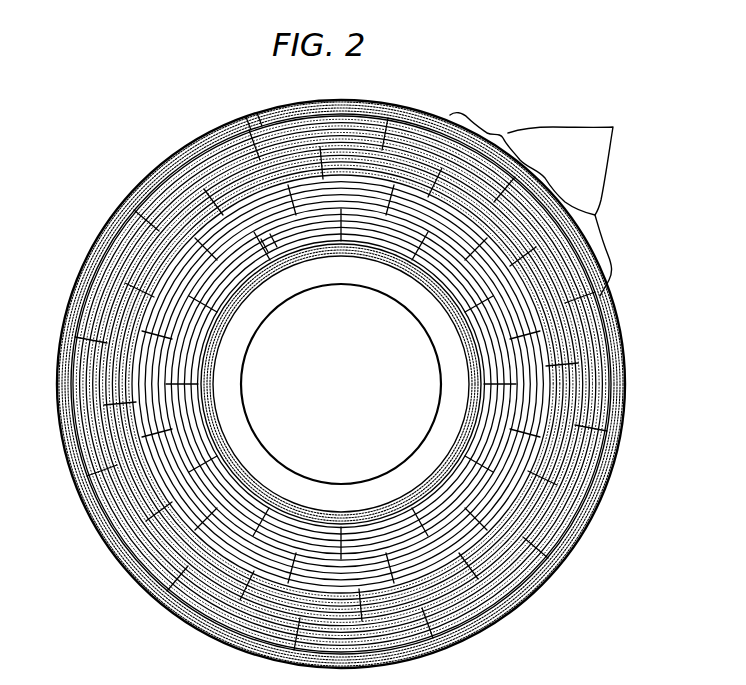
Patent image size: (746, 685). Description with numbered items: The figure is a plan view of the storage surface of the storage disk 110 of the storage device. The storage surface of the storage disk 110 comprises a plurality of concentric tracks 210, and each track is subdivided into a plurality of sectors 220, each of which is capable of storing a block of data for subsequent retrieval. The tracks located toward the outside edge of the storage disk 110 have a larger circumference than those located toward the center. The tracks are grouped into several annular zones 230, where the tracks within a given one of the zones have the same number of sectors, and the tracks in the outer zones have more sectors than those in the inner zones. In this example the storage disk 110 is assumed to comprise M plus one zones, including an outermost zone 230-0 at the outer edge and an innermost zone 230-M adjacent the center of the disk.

The storage disk 110 is at (113, 169).
The concentric tracks 210 is at (514, 580).
The sectors 220 is at (613, 127).
The annular zones 230 is at (550, 424).
The outermost zone 230-0 is at (249, 132).
The innermost zone 230-M is at (264, 245).